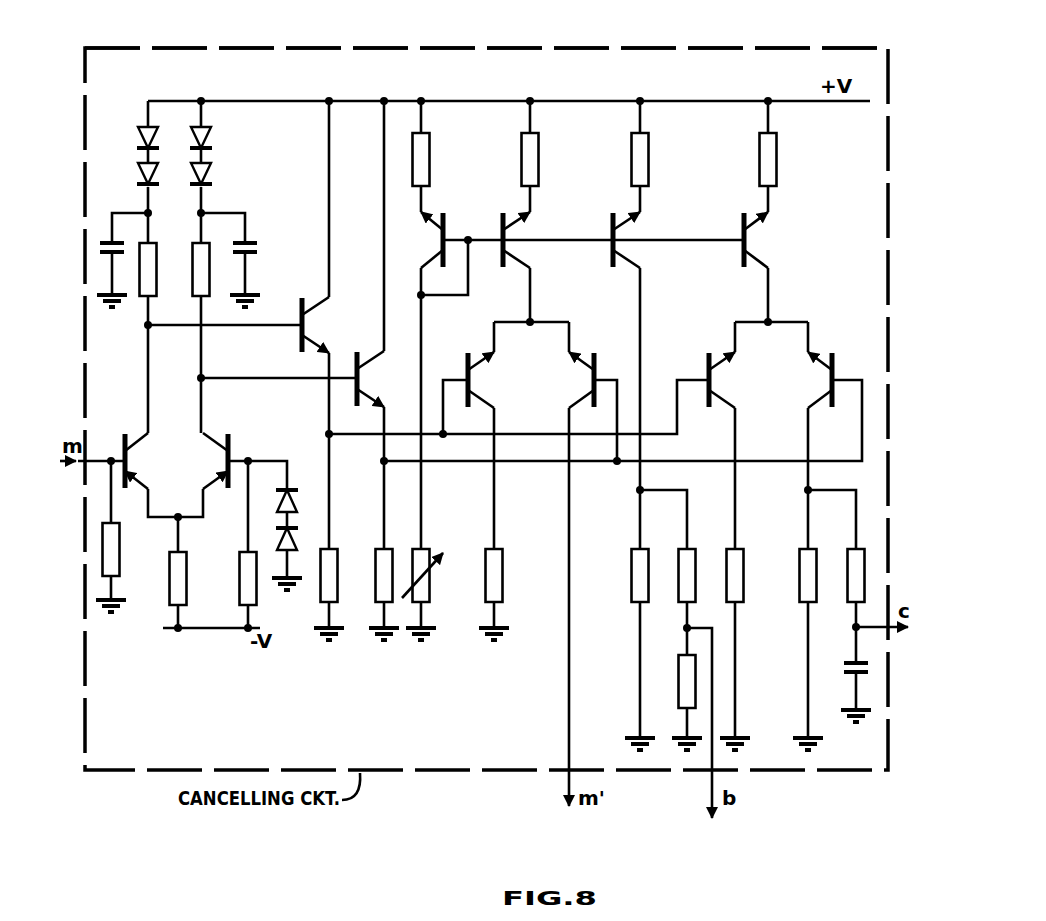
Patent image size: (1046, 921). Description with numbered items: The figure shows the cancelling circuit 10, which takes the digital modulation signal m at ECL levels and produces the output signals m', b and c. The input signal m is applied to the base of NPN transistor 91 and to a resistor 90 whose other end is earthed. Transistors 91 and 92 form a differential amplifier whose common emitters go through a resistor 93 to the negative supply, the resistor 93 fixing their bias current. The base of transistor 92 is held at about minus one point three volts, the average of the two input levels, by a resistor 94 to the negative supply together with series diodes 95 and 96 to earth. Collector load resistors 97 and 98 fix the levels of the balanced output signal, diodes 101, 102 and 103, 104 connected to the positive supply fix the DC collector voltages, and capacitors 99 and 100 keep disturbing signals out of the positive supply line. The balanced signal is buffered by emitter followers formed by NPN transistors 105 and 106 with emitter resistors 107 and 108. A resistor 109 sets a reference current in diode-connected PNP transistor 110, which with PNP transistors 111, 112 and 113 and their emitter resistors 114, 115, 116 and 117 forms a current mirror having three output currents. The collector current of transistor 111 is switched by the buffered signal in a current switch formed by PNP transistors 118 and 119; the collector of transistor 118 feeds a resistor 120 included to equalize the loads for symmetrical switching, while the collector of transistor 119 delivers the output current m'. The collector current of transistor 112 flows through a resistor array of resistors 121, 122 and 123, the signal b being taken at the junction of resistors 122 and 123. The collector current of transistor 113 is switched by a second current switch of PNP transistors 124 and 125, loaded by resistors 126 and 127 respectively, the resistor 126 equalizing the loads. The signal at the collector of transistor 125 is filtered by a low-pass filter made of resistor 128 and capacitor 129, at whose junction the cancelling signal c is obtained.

The cancelling circuit 10 is at (420, 46).
The resistor 90 is at (116, 567).
The NPN transistor 91 is at (134, 462).
The NPN transistor 92 is at (224, 462).
The resistor 93 is at (182, 578).
The resistor 94 is at (244, 570).
The diode 95 is at (294, 502).
The diode 96 is at (294, 540).
The resistor 97 is at (150, 258).
The resistor 98 is at (203, 258).
The capacitor 99 is at (110, 240).
The capacitor 100 is at (249, 240).
The diode 101 is at (138, 132).
The diode 102 is at (138, 169).
The diode 103 is at (205, 132).
The diode 104 is at (205, 170).
The NPN transistor 105 is at (312, 330).
The NPN transistor 106 is at (370, 380).
The resistor 107 is at (336, 570).
The resistor 108 is at (390, 568).
The resistor 109 is at (430, 548).
The PNP transistor 110 is at (446, 220).
The PNP transistor 111 is at (518, 232).
The PNP transistor 112 is at (628, 232).
The PNP transistor 113 is at (758, 232).
The resistor 114 is at (430, 172).
The resistor 115 is at (536, 172).
The resistor 116 is at (644, 172).
The resistor 117 is at (773, 172).
The PNP transistor 118 is at (480, 380).
The PNP transistor 119 is at (586, 380).
The resistor 120 is at (498, 572).
The resistor 121 is at (636, 572).
The resistor 122 is at (690, 566).
The resistor 123 is at (682, 675).
The PNP transistor 124 is at (716, 380).
The PNP transistor 125 is at (824, 380).
The resistor 126 is at (742, 566).
The resistor 127 is at (814, 566).
The resistor 128 is at (850, 590).
The capacitor 129 is at (853, 679).